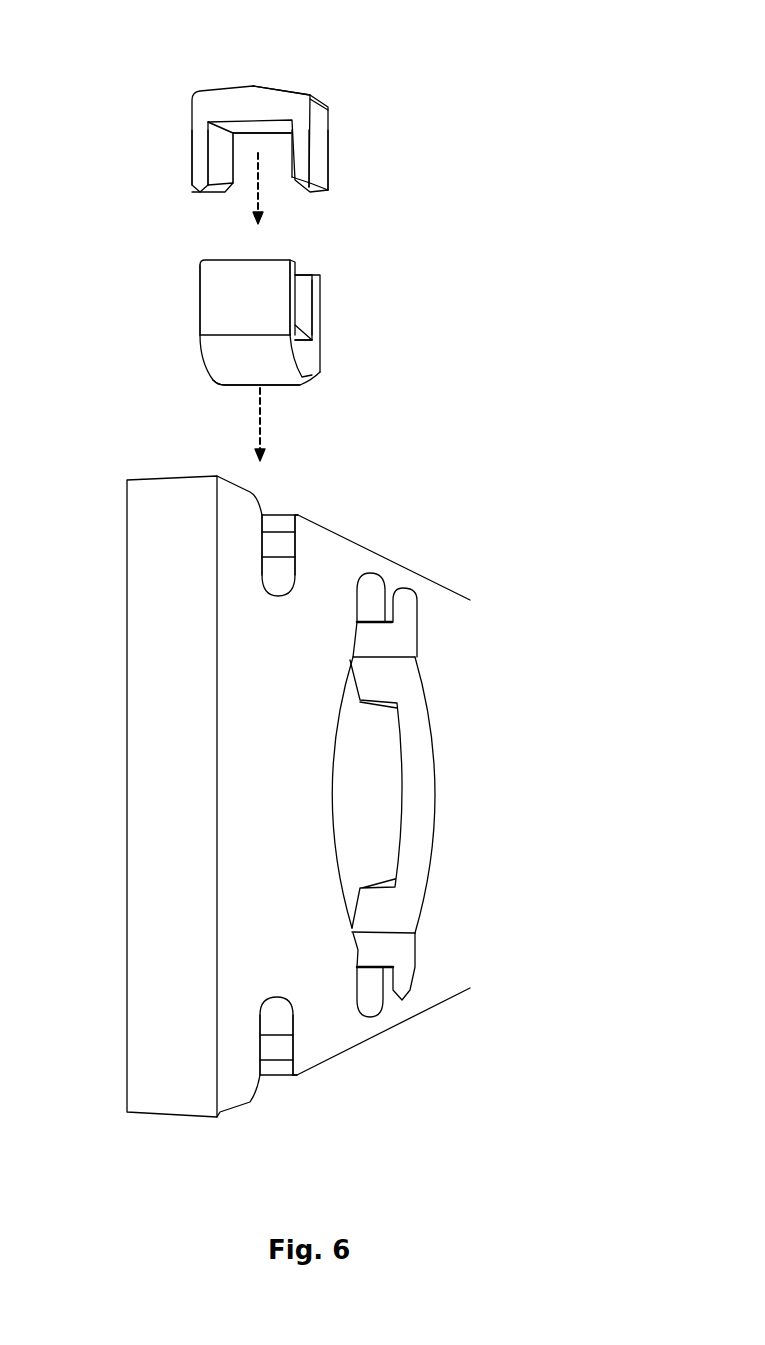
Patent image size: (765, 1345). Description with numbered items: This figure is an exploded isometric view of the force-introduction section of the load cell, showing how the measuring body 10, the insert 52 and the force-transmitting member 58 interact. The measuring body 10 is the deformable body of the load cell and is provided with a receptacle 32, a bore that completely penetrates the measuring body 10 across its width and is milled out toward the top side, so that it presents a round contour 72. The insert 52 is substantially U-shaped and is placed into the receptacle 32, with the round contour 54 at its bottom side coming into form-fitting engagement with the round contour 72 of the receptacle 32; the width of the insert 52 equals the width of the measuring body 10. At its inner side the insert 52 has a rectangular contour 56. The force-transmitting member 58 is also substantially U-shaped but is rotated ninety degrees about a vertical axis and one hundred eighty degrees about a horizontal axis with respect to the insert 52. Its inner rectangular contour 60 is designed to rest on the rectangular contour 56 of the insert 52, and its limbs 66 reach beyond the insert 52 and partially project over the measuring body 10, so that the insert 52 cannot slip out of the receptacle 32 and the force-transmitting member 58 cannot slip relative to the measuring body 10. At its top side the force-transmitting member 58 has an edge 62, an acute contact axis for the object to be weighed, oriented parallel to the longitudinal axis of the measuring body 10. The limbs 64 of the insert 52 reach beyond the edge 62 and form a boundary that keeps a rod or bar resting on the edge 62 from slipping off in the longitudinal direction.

The measuring body 10 is at (165, 700).
The receptacle 32 is at (288, 497).
The insert 52 is at (338, 328).
The round contour 54 is at (229, 398).
The rectangular contour 56 is at (313, 325).
The force-transmitting member 58 is at (363, 145).
The rectangular contour 60 is at (265, 125).
The edge 62 is at (253, 78).
The limbs 64 is at (225, 300).
The limbs 66 is at (203, 158).
The round contour 72 is at (278, 600).